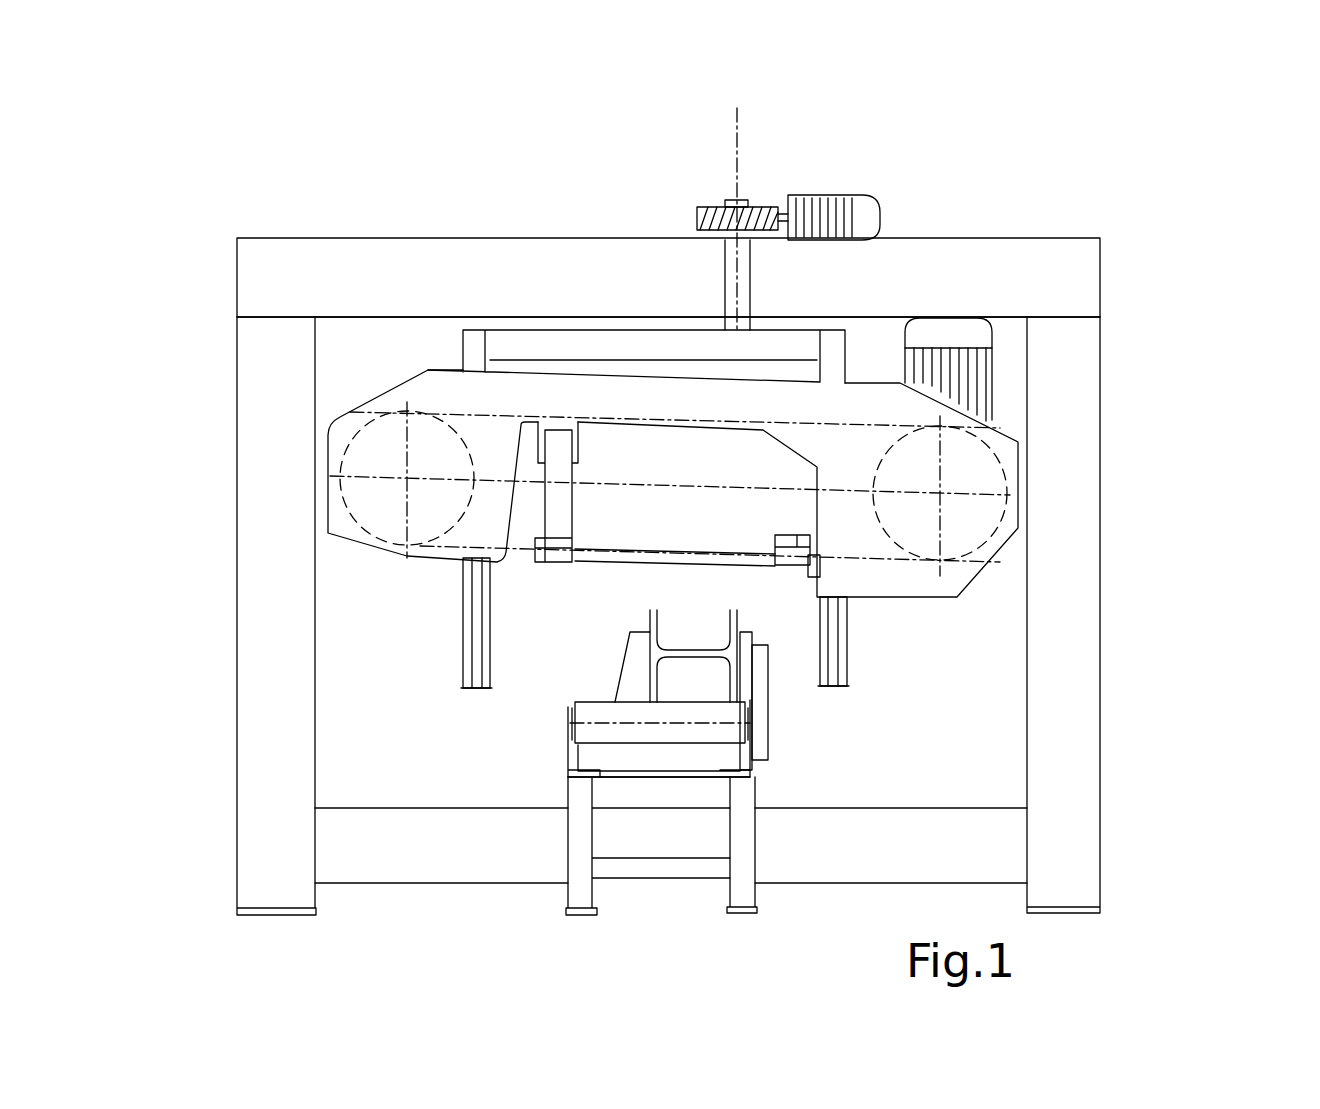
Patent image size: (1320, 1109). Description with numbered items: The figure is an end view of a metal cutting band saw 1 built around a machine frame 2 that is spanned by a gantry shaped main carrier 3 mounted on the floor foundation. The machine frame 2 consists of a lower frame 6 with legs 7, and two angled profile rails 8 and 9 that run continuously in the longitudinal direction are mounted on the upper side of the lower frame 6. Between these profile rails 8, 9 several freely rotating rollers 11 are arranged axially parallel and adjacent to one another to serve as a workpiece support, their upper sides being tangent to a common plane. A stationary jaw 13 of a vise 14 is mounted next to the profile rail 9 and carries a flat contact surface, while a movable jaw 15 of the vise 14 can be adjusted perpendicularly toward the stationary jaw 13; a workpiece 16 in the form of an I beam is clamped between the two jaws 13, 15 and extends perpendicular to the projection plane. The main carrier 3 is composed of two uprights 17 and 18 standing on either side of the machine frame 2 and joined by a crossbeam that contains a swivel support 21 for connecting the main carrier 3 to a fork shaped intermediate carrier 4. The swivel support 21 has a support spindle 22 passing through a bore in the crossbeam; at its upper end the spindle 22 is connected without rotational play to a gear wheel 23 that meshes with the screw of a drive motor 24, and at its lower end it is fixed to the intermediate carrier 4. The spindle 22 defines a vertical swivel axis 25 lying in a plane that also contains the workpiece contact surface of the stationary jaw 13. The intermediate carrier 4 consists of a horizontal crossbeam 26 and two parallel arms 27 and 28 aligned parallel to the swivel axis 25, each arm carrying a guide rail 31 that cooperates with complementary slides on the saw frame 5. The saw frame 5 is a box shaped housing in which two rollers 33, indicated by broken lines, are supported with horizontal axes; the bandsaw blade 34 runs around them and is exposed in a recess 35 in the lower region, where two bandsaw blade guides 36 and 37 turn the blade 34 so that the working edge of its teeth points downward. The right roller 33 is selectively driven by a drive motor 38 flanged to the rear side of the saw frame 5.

The metal cutting band saw 1 is at (1185, 163).
The machine frame 2 is at (560, 898).
The main carrier 3 is at (322, 198).
The intermediate carrier 4 is at (437, 643).
The saw frame 5 is at (975, 595).
The lower frame 6 is at (771, 906).
The legs 7 is at (726, 893).
The angled profile rail 8 is at (568, 753).
The angled profile rail 9 is at (752, 775).
The rollers 11 is at (590, 708).
The stationary jaw 13 is at (1000, 250).
The vise 14 is at (618, 615).
The movable jaw 15 is at (640, 645).
The workpiece 16 is at (740, 620).
The upright 17 is at (1070, 578).
The upright 18 is at (244, 626).
The swivel support 21 is at (870, 830).
The support spindle 22 is at (742, 292).
The gear wheel 23 is at (713, 205).
The drive motor 24 is at (835, 195).
The vertical swivel axis 25 is at (738, 120).
The crossbeam 26 is at (548, 345).
The arm 27 is at (460, 690).
The arm 28 is at (845, 687).
The guide rails 31 is at (470, 600).
The rollers 33 is at (330, 487).
The bandsaw blade 34 is at (722, 423).
The recess 35 is at (641, 512).
The bandsaw blade guide 36 is at (783, 535).
The bandsaw blade guide 37 is at (558, 510).
The drive motor 38 is at (972, 375).